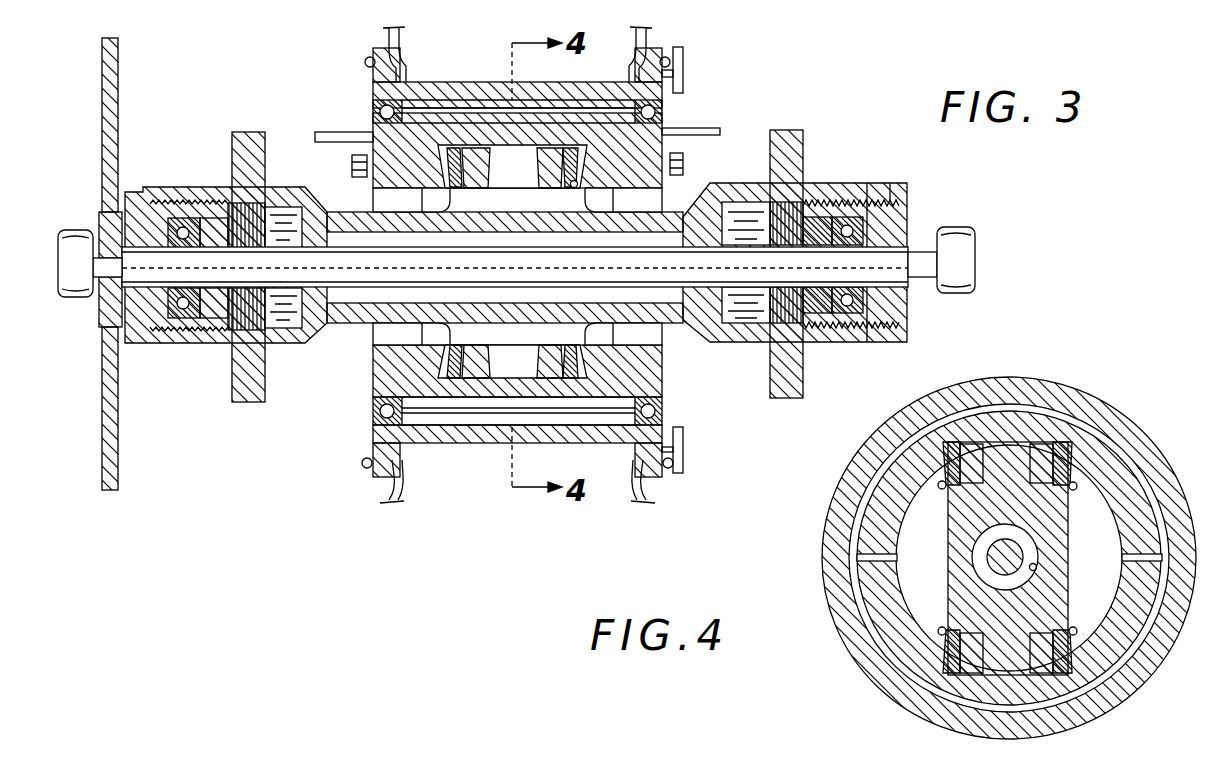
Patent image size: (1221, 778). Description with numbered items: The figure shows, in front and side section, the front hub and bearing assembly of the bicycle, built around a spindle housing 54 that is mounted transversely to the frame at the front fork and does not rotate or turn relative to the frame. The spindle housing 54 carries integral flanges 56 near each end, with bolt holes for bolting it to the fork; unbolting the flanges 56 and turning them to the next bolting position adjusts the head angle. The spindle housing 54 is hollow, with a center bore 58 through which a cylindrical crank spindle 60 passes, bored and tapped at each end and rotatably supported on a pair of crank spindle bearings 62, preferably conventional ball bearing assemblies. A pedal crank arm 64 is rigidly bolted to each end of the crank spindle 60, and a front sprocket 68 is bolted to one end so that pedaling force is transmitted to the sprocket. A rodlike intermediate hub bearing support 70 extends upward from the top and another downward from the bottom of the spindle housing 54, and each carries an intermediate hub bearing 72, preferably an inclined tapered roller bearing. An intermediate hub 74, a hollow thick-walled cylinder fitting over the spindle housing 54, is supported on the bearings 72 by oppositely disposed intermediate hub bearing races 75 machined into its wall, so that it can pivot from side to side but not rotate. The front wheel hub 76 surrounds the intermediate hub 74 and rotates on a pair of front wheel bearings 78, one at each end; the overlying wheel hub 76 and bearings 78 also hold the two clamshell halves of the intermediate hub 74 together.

In FIG. 3, the spindle housing 54 is at (830, 342).
In FIG. 4, the spindle housing 54 is at (1066, 520).
In FIG. 3, the integral flanges 56 is at (233, 156).
In FIG. 3, the center bore 58 is at (348, 236).
In FIG. 4, the center bore 58 is at (1040, 567).
In FIG. 3, the crank spindle 60 is at (668, 285).
In FIG. 4, the crank spindle 60 is at (990, 546).
In FIG. 3, the crank spindle bearings 62 is at (862, 290).
In FIG. 3, the pedal crank arm 64 is at (88, 298).
In FIG. 3, the front sprocket 68 is at (102, 87).
In FIG. 3, the intermediate hub bearing support 70 is at (547, 170).
In FIG. 4, the intermediate hub bearing support 70 is at (1040, 452).
In FIG. 3, the intermediate hub bearings 72 is at (583, 167).
In FIG. 4, the intermediate hub bearings 72 is at (1075, 457).
In FIG. 3, the intermediate hub 74 is at (377, 130).
In FIG. 4, the intermediate hub 74 is at (1132, 637).
In FIG. 3, the intermediate hub bearing races 75 is at (574, 187).
In FIG. 4, the intermediate hub bearing races 75 is at (940, 483).
In FIG. 3, the front wheel hub 76 is at (430, 82).
In FIG. 4, the front wheel hub 76 is at (824, 512).
In FIG. 3, the front wheel bearings 78 is at (654, 405).